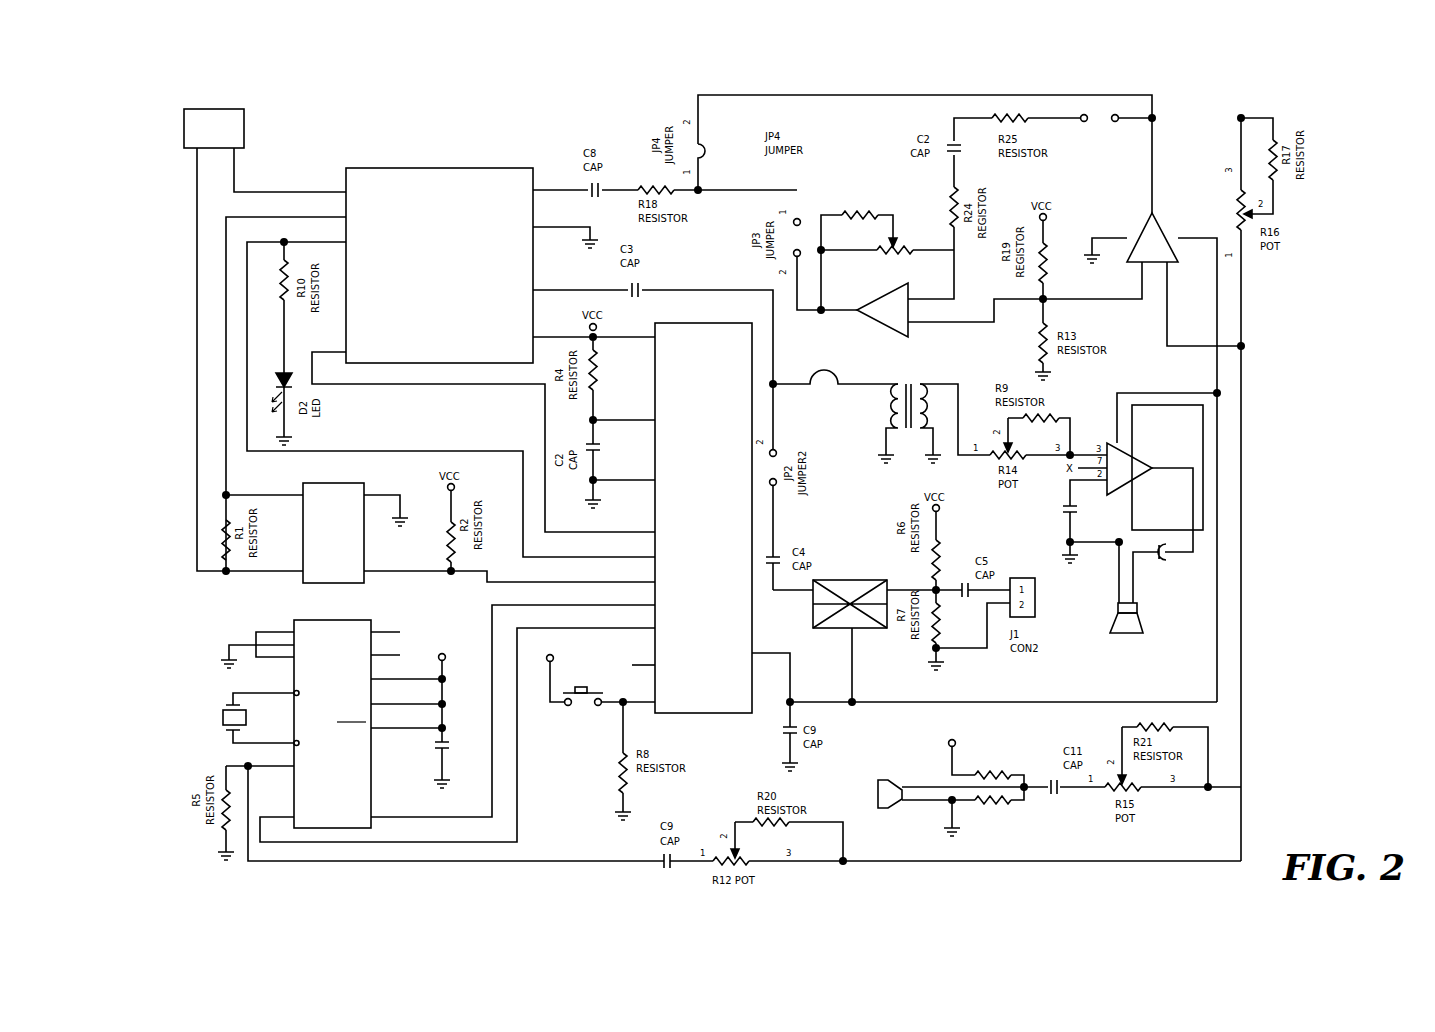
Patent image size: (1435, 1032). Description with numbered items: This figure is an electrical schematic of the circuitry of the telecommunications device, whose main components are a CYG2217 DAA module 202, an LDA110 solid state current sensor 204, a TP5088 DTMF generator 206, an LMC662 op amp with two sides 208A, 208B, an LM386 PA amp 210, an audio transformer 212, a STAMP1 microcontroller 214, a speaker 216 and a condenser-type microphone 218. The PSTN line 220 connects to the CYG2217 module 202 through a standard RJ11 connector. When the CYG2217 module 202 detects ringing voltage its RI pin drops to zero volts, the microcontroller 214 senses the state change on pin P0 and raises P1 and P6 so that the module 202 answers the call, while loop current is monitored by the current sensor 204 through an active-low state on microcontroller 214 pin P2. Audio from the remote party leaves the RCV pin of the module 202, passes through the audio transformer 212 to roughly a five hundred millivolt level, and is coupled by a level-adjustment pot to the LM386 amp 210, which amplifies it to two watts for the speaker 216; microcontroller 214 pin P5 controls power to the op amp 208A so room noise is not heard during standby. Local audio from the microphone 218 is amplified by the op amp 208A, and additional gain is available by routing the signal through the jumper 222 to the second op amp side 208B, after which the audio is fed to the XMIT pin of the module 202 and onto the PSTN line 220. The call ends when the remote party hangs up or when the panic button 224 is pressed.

The CYG2217 DAA module 202 is at (431, 168).
The LDA110 solid state current sensor 204 is at (350, 467).
The TP5088 DTMF generator 206 is at (347, 598).
The LMC662 op amp 208A is at (1153, 224).
The LMC662 op amp second side 208B is at (893, 343).
The LM386 PA amp 210 is at (1142, 455).
The audio transformer 212 is at (892, 470).
The STAMP1 microcontroller 214 is at (705, 713).
The speaker 216 is at (1144, 620).
The microphone 218 is at (870, 752).
The PSTN line 220 is at (246, 118).
The jumper 222 is at (1099, 113).
The panic button 224 is at (580, 688).